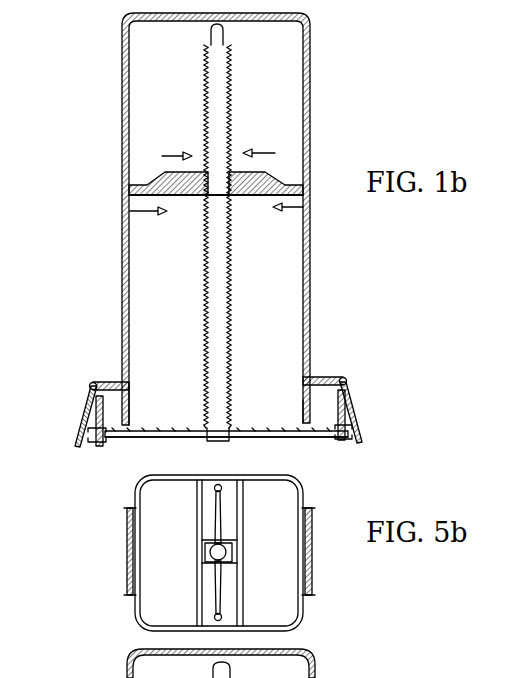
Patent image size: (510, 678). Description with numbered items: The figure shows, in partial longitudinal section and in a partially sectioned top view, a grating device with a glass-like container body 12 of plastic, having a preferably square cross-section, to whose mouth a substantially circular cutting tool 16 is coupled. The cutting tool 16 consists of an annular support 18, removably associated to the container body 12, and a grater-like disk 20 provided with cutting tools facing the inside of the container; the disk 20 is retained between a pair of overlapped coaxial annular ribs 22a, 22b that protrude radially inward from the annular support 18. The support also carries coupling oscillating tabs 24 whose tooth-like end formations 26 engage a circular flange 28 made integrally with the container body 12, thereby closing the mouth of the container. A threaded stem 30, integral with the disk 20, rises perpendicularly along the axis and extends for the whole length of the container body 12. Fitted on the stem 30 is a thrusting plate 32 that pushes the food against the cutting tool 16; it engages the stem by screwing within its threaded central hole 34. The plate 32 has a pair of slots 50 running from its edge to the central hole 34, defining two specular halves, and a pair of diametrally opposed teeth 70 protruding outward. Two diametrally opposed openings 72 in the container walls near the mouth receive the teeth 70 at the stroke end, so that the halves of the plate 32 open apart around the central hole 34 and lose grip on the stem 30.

In FIG. 1B, the glass-like container body 12 is at (310, 72).
In FIG. 5B, the glass-like container body 12 is at (131, 598).
In FIG. 1B, the cutting tool 16 is at (300, 445).
In FIG. 1B, the annular support 18 is at (322, 377).
In FIG. 1B, the disk 20 is at (150, 438).
In FIG. 1B, the coaxial annular rib 22a is at (94, 431).
In FIG. 1B, the coaxial annular rib 22b is at (104, 446).
In FIG. 1B, the coupling oscillating tab 24 is at (97, 400).
In FIG. 1B, the tooth-like end formation 26 is at (92, 382).
In FIG. 1B, the circular flange 28 is at (112, 382).
In FIG. 1B, the threaded stem 30 is at (221, 268).
In FIG. 1B, the thrusting plate 32 is at (279, 166).
In FIG. 5B, the thrusting plate 32 is at (310, 628).
In FIG. 5B, the threaded central hole 34 is at (226, 552).
In FIG. 5B, the slot 50 is at (212, 518).
In FIG. 5B, the tooth 70 is at (128, 553).
In FIG. 1B, the opening 72 is at (132, 408).